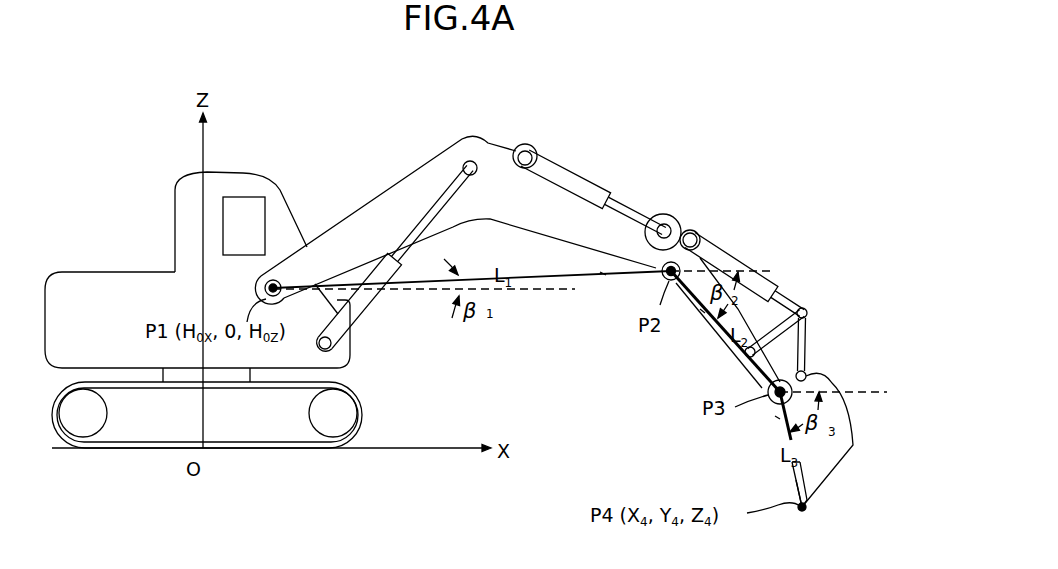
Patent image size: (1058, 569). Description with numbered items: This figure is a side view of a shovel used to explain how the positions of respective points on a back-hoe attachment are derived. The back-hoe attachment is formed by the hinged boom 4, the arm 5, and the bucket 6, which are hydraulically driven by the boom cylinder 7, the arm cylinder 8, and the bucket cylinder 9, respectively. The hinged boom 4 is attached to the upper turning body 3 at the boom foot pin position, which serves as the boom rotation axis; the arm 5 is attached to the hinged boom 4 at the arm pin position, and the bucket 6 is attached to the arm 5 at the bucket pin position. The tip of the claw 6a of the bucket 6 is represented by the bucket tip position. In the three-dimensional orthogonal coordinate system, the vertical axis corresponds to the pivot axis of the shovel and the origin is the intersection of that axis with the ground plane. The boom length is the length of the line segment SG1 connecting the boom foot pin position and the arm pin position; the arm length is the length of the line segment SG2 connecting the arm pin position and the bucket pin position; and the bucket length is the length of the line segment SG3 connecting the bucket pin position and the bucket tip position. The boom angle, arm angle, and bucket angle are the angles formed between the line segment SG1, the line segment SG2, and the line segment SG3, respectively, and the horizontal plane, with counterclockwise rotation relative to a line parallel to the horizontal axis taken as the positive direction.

The upper turning body 3 is at (128, 272).
The hinged boom 4 is at (380, 190).
The arm 5 is at (673, 214).
The bucket 6 is at (832, 447).
The claw 6a is at (808, 505).
The boom cylinder 7 is at (352, 317).
The arm cylinder 8 is at (569, 178).
The bucket cylinder 9 is at (713, 257).
The line segment SG1 is at (603, 273).
The line segment SG2 is at (702, 311).
The line segment SG3 is at (777, 417).